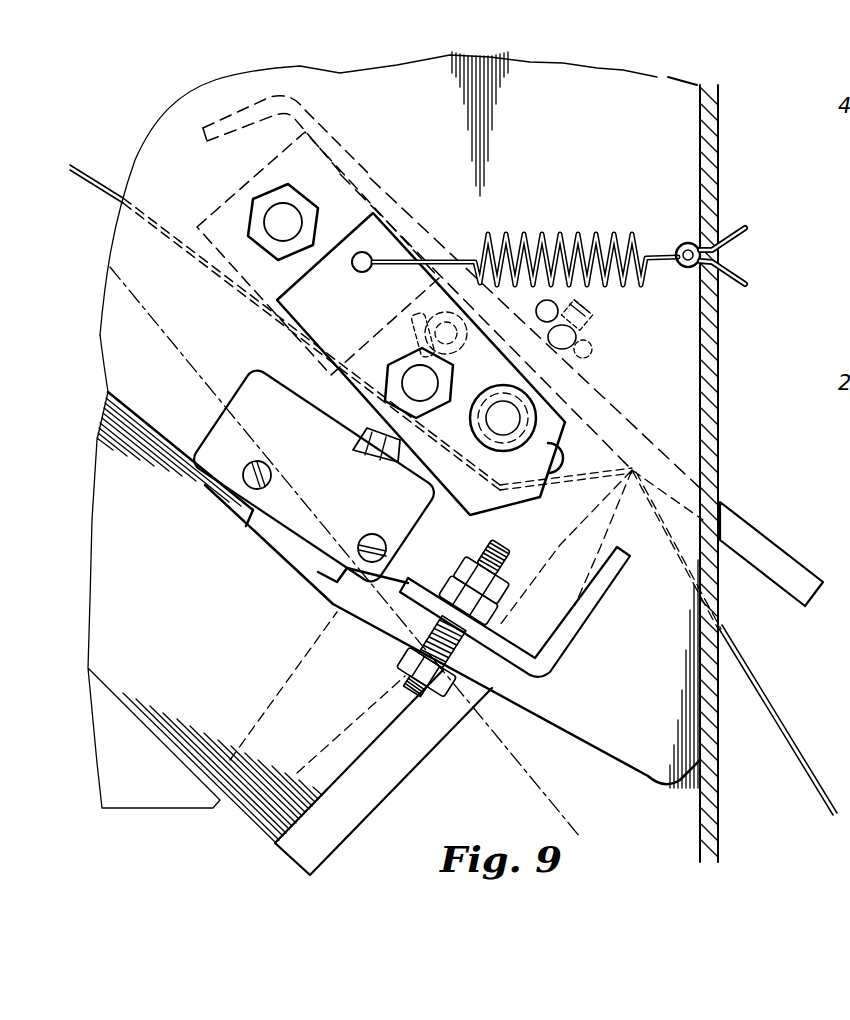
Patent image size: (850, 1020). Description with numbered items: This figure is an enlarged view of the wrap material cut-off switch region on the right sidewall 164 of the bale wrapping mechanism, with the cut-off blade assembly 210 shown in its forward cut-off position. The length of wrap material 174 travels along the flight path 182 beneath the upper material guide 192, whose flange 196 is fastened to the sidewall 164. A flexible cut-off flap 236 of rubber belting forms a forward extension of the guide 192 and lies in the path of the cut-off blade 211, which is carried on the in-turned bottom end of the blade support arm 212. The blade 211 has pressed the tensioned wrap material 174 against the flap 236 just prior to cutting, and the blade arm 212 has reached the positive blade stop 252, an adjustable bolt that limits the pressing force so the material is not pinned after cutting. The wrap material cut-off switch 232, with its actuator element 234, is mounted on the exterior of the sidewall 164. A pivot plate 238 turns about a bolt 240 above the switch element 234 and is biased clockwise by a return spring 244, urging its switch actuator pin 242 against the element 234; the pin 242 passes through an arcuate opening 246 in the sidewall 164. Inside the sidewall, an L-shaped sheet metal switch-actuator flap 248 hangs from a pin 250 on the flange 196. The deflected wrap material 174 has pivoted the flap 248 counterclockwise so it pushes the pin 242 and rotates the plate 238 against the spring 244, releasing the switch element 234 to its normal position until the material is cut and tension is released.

The wrap material 174 is at (96, 188).
The flange 196 is at (232, 199).
The upper material guide 192 is at (338, 137).
The pivot plate 238 is at (368, 215).
The return spring 244 is at (640, 232).
The pin 250 is at (430, 308).
The bolt 240 is at (418, 386).
The switch-actuator flap 248 is at (592, 350).
The switch actuator pin 242 is at (527, 422).
The flight path 182 is at (170, 338).
The wrap material cut-off switch 232 is at (250, 368).
The actuator element 234 is at (400, 470).
The arcuate opening 246 is at (470, 490).
The cut-off flap 236 is at (775, 542).
The blade support arm 212 is at (197, 631).
The sidewall 164 is at (632, 706).
The cut-off blade assembly 210 is at (180, 768).
The positive blade stop 252 is at (547, 686).
The cut-off blade 211 is at (358, 822).